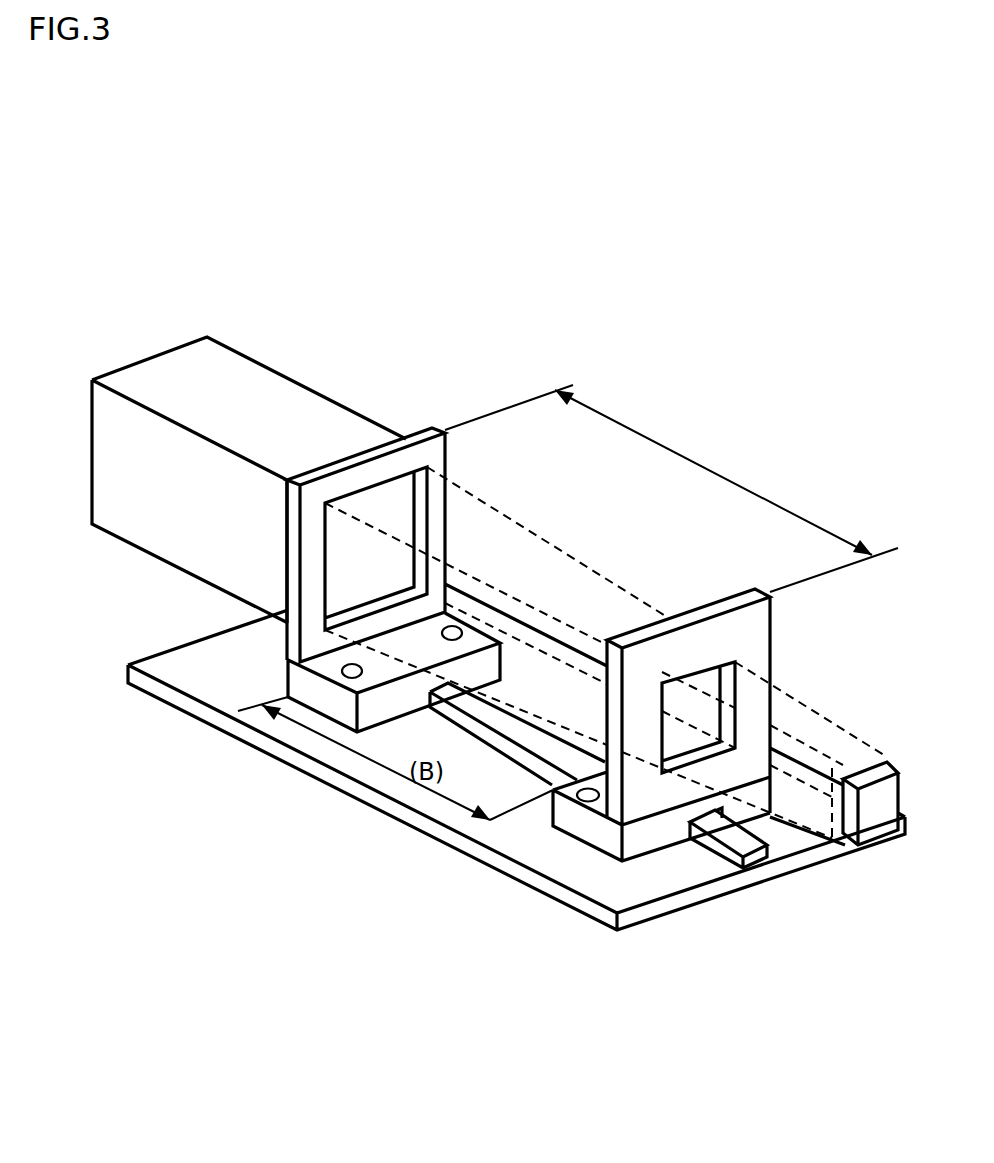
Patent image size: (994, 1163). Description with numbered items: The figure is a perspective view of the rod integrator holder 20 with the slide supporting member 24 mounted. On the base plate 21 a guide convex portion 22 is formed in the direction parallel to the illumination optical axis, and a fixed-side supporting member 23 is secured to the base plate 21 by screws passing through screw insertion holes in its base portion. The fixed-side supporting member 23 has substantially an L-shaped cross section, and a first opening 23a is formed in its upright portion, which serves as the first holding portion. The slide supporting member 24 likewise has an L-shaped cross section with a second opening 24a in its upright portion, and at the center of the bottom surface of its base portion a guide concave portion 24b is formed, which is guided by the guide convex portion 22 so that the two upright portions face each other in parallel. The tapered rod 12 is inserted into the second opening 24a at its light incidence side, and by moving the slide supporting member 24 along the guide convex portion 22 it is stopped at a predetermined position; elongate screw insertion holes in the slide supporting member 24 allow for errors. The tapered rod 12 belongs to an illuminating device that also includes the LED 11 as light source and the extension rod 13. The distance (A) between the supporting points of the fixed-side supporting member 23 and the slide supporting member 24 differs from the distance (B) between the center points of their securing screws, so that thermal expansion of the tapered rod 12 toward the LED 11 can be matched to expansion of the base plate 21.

The LED 11 is at (870, 775).
The tapered rod 12 is at (556, 545).
The extension rod 13 is at (268, 388).
The rod integrator holder 20 is at (530, 374).
The base plate 21 is at (236, 731).
The guide convex portion 22 is at (735, 852).
The fixed-side supporting member 23 is at (393, 541).
The first opening 23a is at (414, 500).
The slide supporting member 24 is at (661, 755).
The second opening 24a is at (718, 664).
The guide concave portion 24b is at (697, 833).